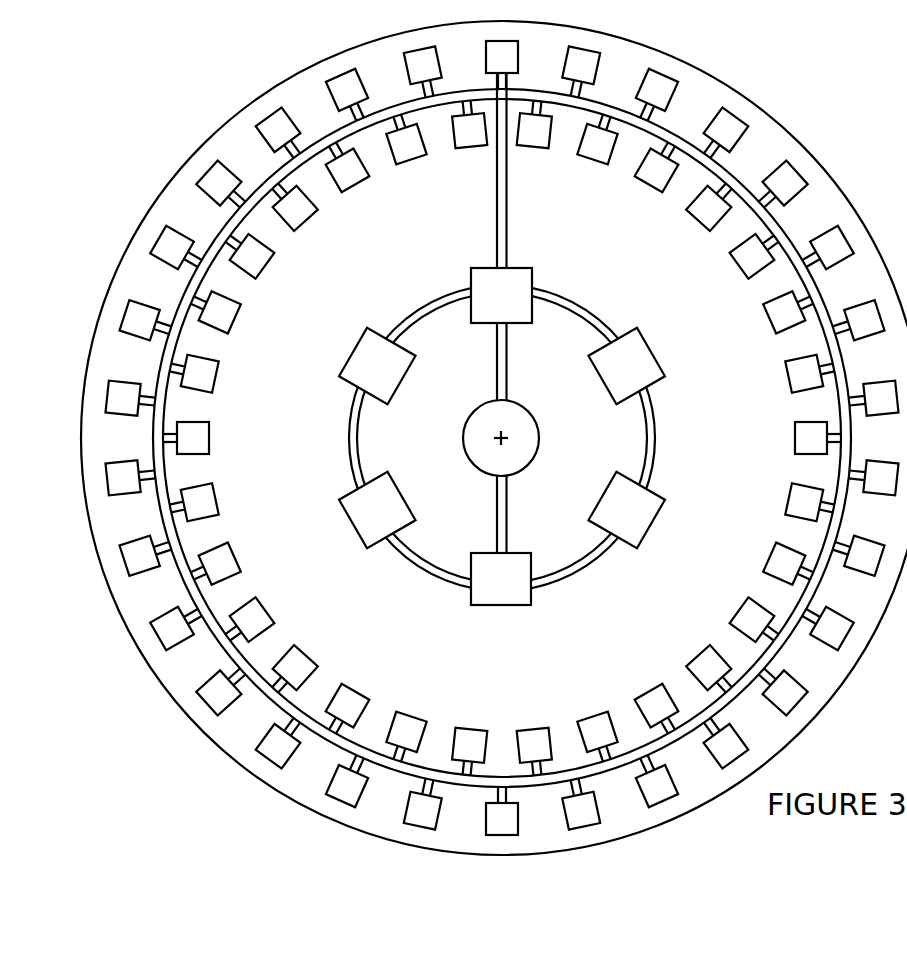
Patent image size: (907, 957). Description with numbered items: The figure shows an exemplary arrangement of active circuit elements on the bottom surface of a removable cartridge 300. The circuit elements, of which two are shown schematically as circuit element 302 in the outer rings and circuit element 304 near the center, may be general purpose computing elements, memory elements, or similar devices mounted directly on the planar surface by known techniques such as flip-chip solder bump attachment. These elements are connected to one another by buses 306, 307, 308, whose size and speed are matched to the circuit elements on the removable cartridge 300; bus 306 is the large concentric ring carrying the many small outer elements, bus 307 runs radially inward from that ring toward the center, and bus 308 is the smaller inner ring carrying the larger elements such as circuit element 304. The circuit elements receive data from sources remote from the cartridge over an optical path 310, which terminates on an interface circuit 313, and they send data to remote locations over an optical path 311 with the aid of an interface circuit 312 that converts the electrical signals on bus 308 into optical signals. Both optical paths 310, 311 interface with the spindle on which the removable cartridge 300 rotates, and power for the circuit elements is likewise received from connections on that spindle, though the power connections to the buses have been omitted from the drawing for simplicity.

The removable cartridge 300 is at (796, 116).
The circuit element 302 is at (215, 190).
The circuit element 304 is at (360, 350).
The bus 306 is at (160, 390).
The bus 307 is at (508, 215).
The bus 308 is at (593, 317).
The optical path 310 is at (503, 388).
The optical path 311 is at (502, 537).
The interface circuit 312 is at (510, 597).
The interface circuit 313 is at (482, 279).